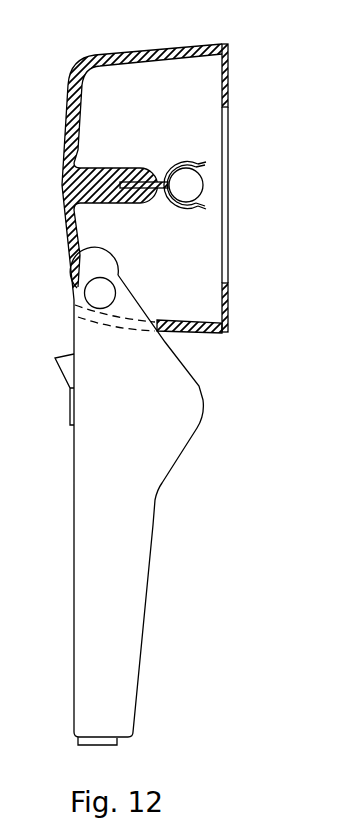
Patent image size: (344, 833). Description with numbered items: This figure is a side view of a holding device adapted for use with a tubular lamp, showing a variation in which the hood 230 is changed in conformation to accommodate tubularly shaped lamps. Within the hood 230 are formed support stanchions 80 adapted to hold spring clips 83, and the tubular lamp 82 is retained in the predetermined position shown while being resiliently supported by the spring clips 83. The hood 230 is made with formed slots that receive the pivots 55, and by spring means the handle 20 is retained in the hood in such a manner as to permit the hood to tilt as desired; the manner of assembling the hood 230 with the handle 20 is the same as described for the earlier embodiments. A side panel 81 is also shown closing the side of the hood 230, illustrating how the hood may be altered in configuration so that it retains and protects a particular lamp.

The hood 230 is at (138, 55).
The side panel 81 is at (229, 67).
The support stanchions 80 is at (108, 170).
The tubular lamp 82 is at (199, 184).
The spring clips 83 is at (193, 205).
The pivots 55 is at (108, 288).
The handle 20 is at (165, 458).